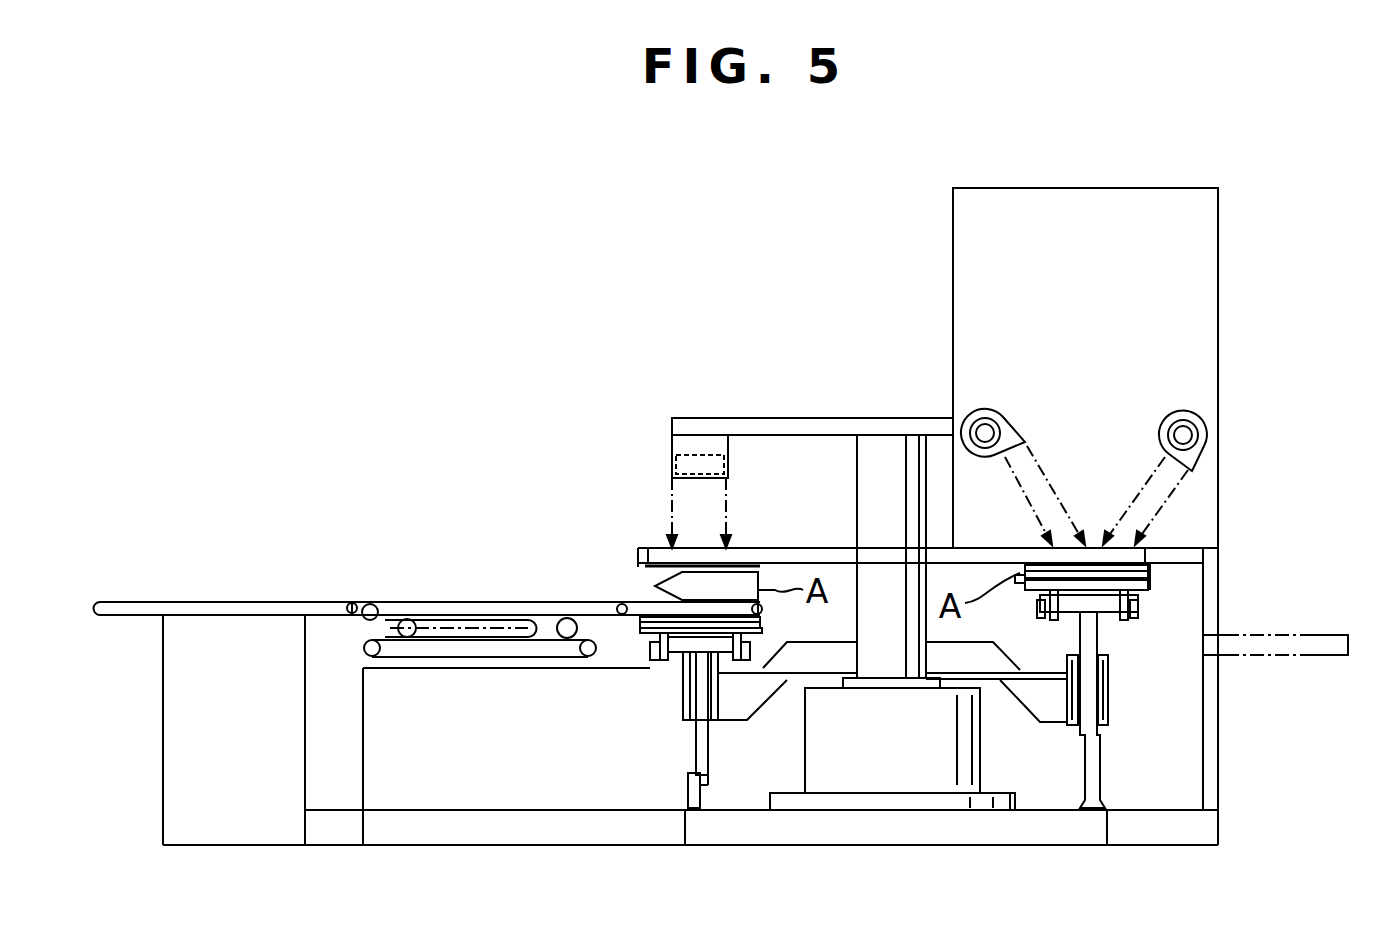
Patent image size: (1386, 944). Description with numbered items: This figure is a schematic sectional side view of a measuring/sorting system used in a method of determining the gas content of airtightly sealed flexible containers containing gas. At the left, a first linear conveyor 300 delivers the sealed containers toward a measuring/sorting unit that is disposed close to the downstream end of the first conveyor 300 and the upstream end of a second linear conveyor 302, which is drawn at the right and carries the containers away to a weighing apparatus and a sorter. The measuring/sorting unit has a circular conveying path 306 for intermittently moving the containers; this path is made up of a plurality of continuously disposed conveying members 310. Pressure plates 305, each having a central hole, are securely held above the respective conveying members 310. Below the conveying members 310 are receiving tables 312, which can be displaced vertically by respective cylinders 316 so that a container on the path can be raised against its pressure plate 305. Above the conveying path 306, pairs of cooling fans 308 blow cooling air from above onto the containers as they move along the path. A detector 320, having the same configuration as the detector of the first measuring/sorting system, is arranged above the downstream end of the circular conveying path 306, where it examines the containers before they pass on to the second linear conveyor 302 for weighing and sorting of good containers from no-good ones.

The first linear conveyor 300 is at (280, 602).
The second linear conveyor 302 is at (1277, 650).
The pressure plates 305 is at (648, 568).
The circular conveying path 306 is at (778, 540).
The cooling fans 308 is at (670, 462).
The conveying members 310 is at (653, 666).
The receiving tables 312 is at (632, 640).
The cylinders 316 is at (708, 747).
The detector 320 is at (1140, 200).